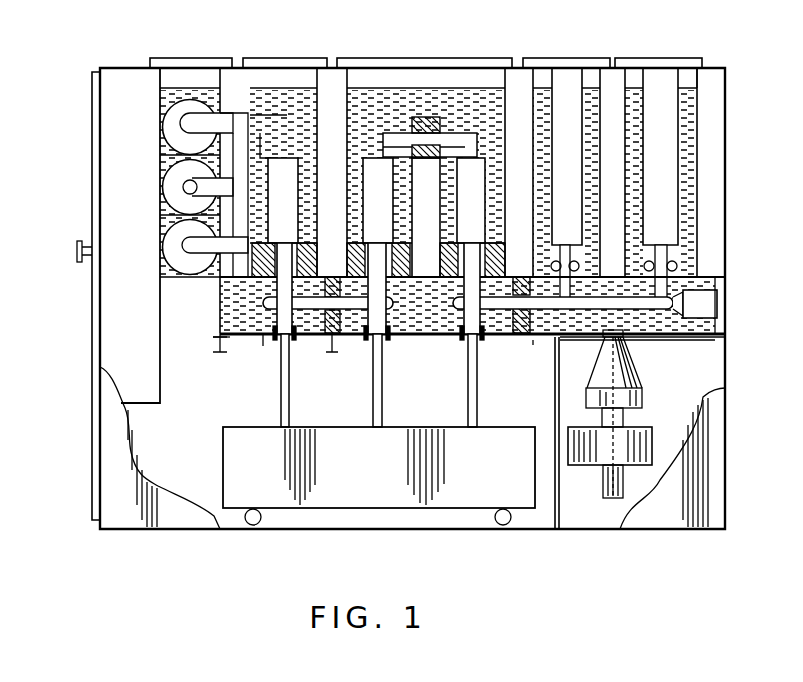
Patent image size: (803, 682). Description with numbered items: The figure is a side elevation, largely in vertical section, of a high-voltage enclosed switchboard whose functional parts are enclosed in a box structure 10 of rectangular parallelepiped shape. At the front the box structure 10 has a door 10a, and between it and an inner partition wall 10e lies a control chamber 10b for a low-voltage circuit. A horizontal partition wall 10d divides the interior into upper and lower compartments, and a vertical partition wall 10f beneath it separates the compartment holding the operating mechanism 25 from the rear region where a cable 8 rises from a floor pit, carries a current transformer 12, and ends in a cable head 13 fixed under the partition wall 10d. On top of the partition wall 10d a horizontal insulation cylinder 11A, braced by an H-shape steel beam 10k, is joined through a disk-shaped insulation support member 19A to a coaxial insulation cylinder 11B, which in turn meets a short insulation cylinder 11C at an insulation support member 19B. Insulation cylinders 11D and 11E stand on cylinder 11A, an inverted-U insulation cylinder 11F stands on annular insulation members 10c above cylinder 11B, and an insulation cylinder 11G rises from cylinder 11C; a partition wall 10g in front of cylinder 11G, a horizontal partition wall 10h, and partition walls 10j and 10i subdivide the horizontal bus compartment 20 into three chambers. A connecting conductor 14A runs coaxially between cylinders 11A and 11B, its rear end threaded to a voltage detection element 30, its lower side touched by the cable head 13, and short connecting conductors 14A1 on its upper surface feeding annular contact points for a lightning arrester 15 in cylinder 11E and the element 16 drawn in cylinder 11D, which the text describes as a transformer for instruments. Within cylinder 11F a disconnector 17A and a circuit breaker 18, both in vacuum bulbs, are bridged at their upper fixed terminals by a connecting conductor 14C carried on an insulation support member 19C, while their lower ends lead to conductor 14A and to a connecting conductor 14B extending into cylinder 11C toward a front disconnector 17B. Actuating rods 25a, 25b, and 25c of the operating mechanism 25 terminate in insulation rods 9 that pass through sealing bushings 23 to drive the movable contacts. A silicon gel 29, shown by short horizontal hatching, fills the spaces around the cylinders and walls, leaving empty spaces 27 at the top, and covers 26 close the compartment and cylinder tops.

The cable 8 is at (603, 480).
The insulation rods 9 is at (275, 346).
The box structure 10 is at (700, 529).
The door 10a is at (91, 98).
The control chamber 10b is at (110, 133).
The annular insulation members 10c is at (640, 505).
The horizontal partition wall 10d is at (637, 338).
The inner partition wall 10e is at (162, 205).
The vertical partition wall 10f is at (555, 512).
The partition wall 10g is at (228, 100).
The horizontal partition wall 10h is at (194, 330).
The partition wall 10i is at (165, 222).
The partition wall 10j is at (165, 150).
The H-shape steel beam 10k is at (505, 371).
The insulation cylinder 11A is at (690, 334).
The insulation cylinder 11B is at (399, 334).
The insulation cylinder 11C is at (221, 361).
The insulation cylinder 11D is at (598, 88).
The insulation cylinder 11E is at (698, 78).
The insulation cylinder 11F is at (518, 78).
The insulation cylinder 11G is at (320, 100).
The current transformer 12 is at (642, 453).
The cable head 13 is at (643, 402).
The connecting conductor 14A is at (522, 336).
The short connecting conductors 14A1 is at (693, 283).
The connecting conductor 14B is at (270, 328).
The connecting conductor 14C is at (450, 133).
The lightning arrester 15 is at (667, 220).
The piston 16 is at (566, 78).
The disconnector 17A is at (472, 180).
The front disconnector 17B is at (170, 278).
The circuit breaker 18 is at (378, 160).
The insulation support member 19A is at (535, 338).
The insulation support member 19B is at (332, 340).
The insulation support member 19C is at (420, 117).
The horizontal bus compartment 20 is at (198, 92).
The sealing bushings 23 is at (243, 336).
The operating mechanism 25 is at (357, 498).
The actuating rod 25a is at (468, 416).
The actuating rod 25b is at (372, 416).
The actuating rod 25c is at (283, 412).
The covers 26 is at (168, 58).
The spaces 27 is at (285, 78).
The silicon gel 29 is at (440, 95).
The voltage detection element 30 is at (720, 302).